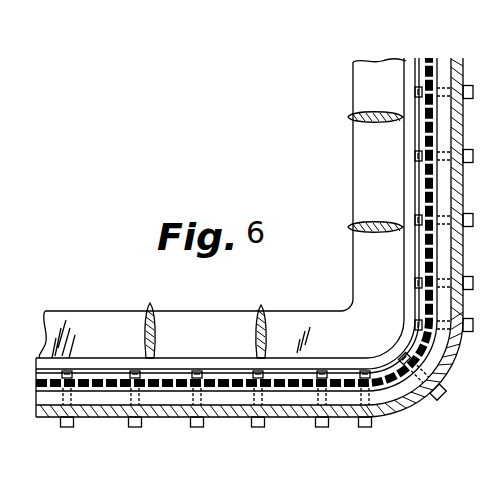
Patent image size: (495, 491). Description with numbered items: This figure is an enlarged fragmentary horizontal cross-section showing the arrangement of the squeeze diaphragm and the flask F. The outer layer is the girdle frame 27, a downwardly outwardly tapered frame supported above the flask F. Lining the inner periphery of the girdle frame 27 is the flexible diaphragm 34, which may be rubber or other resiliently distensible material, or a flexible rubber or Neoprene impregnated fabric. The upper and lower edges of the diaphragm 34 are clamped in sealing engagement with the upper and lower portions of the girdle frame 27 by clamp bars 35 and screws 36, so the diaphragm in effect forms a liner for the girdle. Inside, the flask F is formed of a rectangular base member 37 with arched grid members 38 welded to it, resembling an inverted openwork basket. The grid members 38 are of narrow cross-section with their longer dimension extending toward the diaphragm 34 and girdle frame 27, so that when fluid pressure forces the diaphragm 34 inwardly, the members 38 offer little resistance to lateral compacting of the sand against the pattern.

The girdle frame 27 is at (398, 408).
The flexible diaphragm 34 is at (97, 380).
The clamp bars 35 is at (119, 375).
The screws 36 is at (137, 428).
The rectangular base member 37 is at (368, 90).
The arched grid members 38 is at (268, 330).
The flask F is at (353, 158).